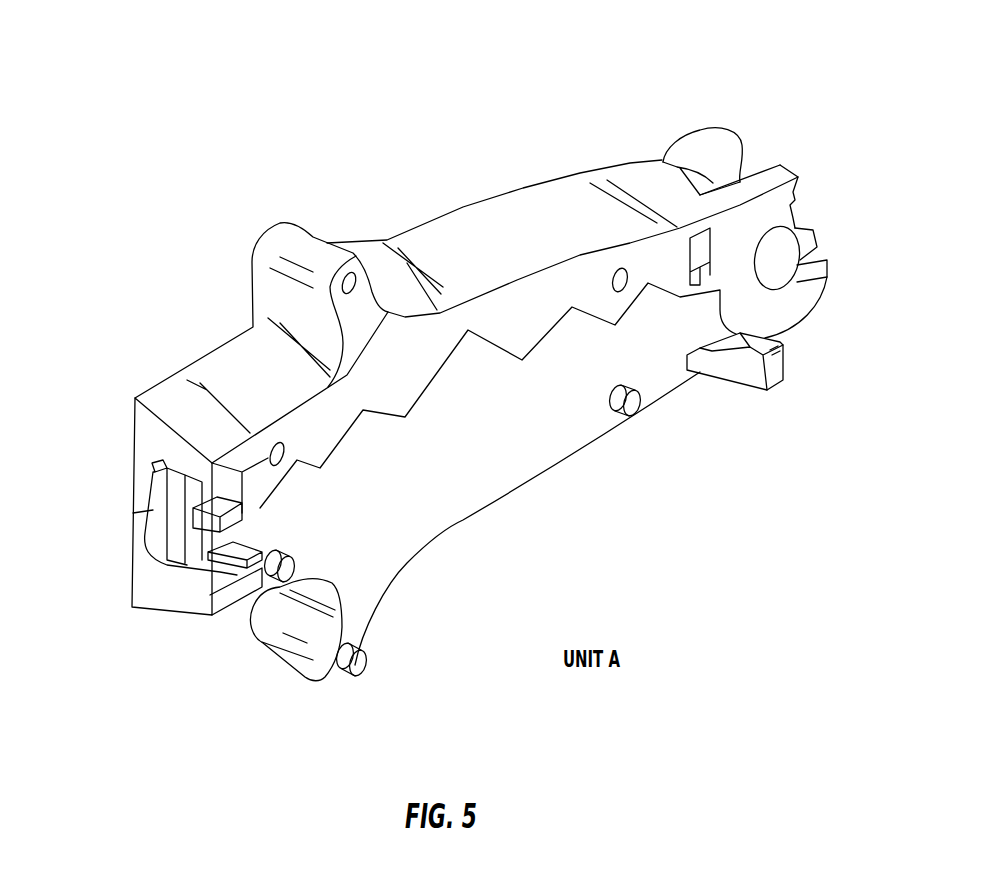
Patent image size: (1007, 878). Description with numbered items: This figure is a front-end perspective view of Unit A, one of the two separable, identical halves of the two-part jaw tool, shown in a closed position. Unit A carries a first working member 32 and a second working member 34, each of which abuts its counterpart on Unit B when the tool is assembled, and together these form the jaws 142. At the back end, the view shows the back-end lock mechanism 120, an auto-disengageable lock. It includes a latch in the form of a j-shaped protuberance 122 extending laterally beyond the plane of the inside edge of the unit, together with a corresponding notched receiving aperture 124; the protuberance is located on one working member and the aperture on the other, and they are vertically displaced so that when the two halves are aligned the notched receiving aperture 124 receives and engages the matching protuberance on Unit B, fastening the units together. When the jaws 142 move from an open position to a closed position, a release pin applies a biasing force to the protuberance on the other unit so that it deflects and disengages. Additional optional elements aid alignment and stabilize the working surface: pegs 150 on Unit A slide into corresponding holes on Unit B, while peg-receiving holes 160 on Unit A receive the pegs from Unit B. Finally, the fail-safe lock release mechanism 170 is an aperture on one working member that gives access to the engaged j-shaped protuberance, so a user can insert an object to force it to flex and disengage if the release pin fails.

The first working member 32 is at (493, 478).
The second working member 34 is at (393, 340).
The back-end lock mechanism 120 is at (790, 173).
The j-shaped protuberance 122 is at (795, 393).
The notched receiving aperture 124 is at (710, 257).
The jaws 142 is at (103, 395).
The pegs 150 is at (643, 405).
The peg-receiving holes 160 is at (279, 440).
The fail-safe lock release mechanism 170 is at (723, 153).